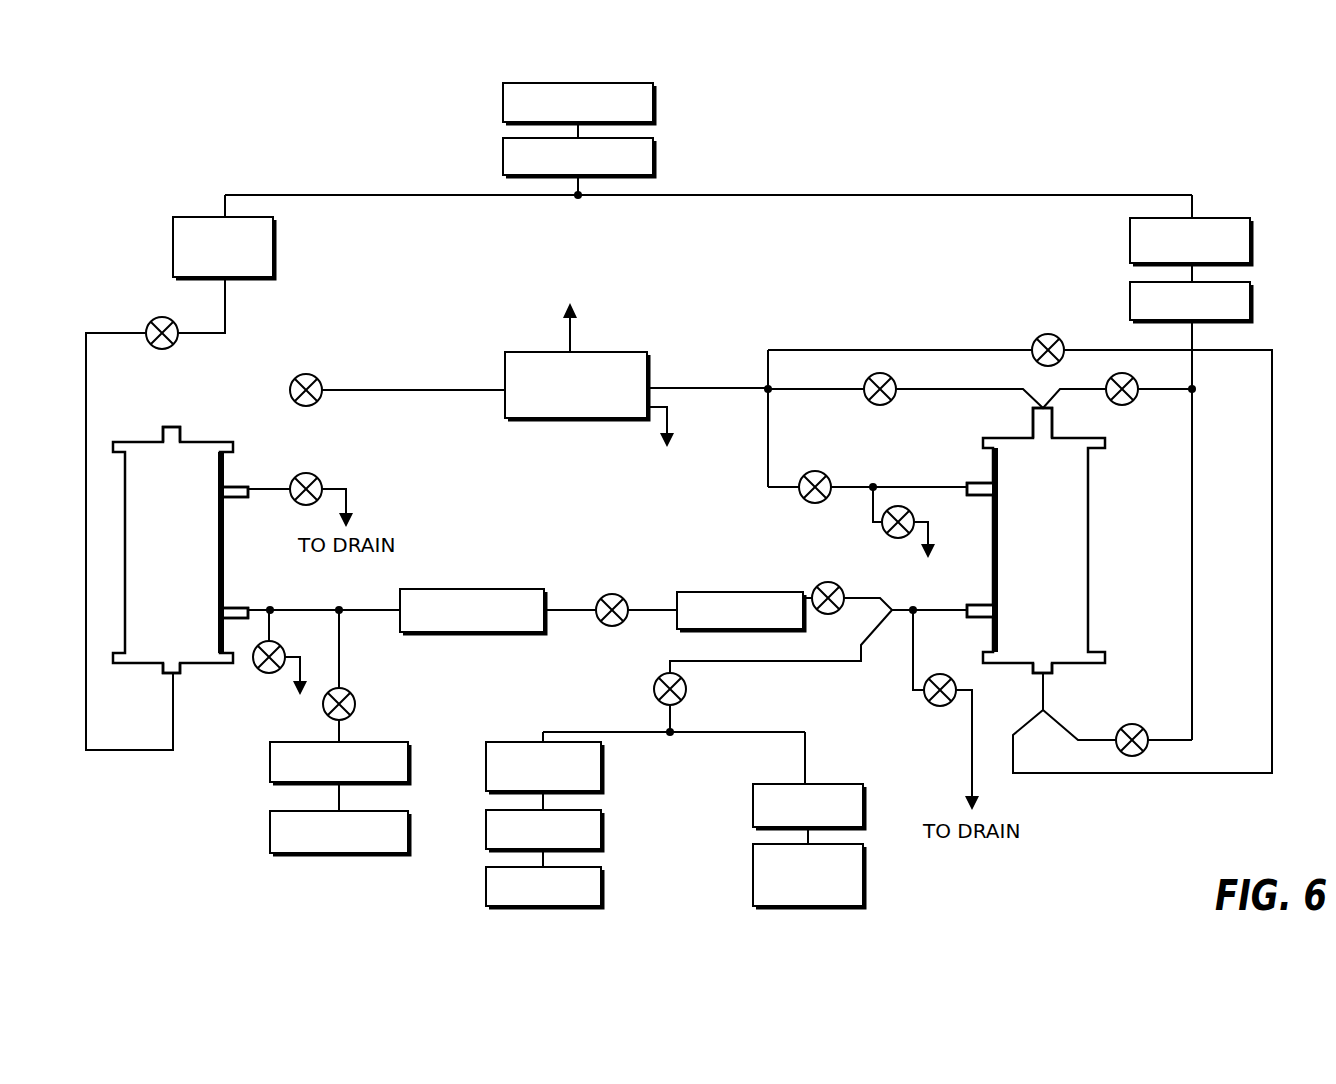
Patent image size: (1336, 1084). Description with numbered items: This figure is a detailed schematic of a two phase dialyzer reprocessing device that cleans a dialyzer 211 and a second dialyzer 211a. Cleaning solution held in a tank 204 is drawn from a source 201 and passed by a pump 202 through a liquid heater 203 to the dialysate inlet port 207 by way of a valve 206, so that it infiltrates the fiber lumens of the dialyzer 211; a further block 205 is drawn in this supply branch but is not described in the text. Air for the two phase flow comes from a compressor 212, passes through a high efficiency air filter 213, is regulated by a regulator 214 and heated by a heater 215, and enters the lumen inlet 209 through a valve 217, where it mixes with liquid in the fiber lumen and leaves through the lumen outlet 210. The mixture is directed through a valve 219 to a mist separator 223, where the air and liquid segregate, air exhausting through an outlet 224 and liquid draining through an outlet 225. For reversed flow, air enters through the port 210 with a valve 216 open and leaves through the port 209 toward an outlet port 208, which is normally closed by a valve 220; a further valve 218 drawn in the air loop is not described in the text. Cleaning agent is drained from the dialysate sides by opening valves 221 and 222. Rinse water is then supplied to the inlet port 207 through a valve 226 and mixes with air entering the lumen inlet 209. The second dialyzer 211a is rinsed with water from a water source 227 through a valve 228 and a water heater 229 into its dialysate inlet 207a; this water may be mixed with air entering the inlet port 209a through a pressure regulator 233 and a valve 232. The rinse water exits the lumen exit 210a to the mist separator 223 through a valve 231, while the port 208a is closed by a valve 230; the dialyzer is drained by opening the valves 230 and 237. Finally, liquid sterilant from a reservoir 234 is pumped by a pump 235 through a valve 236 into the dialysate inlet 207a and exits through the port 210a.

The source 201 is at (525, 897).
The pump 202 is at (525, 840).
The liquid heater 203 is at (525, 777).
The tank 204 is at (790, 880).
The gas supply 205 is at (790, 816).
The valve 206 is at (686, 689).
The dialysate inlet port 207 is at (985, 620).
The dialysate inlet 207a is at (232, 605).
The outlet port 208 is at (975, 480).
The port 208a is at (237, 482).
The lumen inlet 209 is at (1050, 675).
The inlet port 209a is at (160, 670).
The lumen outlet 210 is at (1035, 430).
The lumen exit 210a is at (175, 434).
The dialyzer 211 is at (1090, 570).
The dialyzer 211a is at (138, 438).
The compressor 212 is at (560, 114).
The high efficiency air filter 213 is at (560, 168).
The regulator 214 is at (1172, 252).
The heater 215 is at (1172, 312).
The valve 216 is at (1120, 405).
The valve 217 is at (1142, 726).
The valve 218 is at (1040, 336).
The valve 219 is at (868, 378).
The valve 220 is at (810, 471).
The valve 221 is at (887, 534).
The valve 222 is at (940, 706).
The mist separator 223 is at (558, 396).
The outlet 224 is at (565, 330).
The outlet 225 is at (672, 425).
The valve 226 is at (818, 585).
The water source 227 is at (722, 621).
The valve 228 is at (607, 628).
The water heater 229 is at (454, 621).
The valve 230 is at (322, 478).
The valve 231 is at (316, 376).
The valve 232 is at (152, 320).
The pressure regulator 233 is at (205, 258).
The reservoir 234 is at (321, 843).
The pump 235 is at (321, 773).
The valve 236 is at (357, 700).
The valve 237 is at (263, 674).